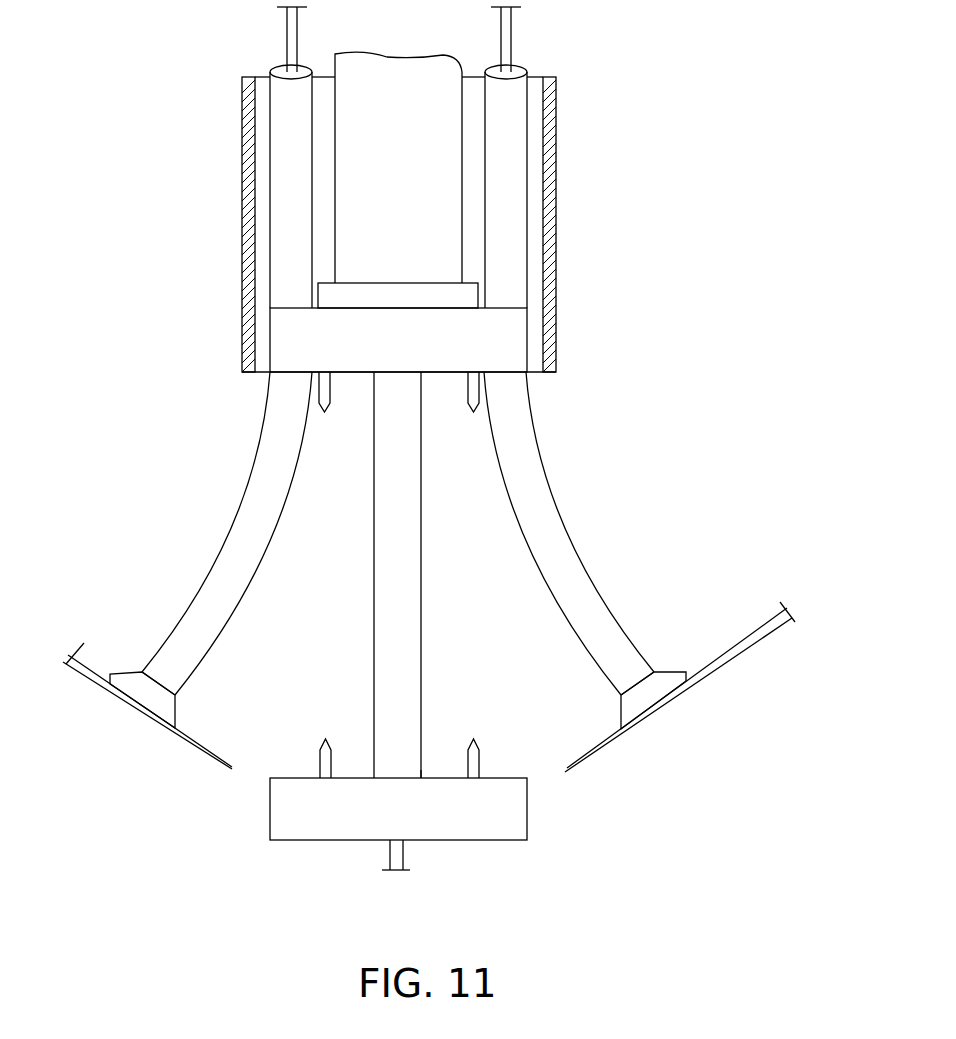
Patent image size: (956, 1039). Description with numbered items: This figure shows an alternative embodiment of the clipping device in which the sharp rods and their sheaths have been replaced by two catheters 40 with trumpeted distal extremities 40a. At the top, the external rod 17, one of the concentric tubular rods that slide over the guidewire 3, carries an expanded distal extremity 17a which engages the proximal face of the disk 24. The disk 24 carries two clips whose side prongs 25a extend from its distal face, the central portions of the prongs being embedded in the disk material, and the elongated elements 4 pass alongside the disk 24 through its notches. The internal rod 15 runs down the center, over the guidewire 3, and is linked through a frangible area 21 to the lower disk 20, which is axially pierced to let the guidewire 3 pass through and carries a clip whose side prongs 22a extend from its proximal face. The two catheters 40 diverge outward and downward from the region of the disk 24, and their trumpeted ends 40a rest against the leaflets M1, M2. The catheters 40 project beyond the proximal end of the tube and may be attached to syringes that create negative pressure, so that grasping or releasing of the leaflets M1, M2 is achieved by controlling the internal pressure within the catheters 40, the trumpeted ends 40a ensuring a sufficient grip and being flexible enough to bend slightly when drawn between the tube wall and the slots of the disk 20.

The elongated element 4 is at (270, 178).
The external rod 17 is at (443, 236).
The expanded distal extremity 17a is at (465, 297).
The disk 24 is at (503, 352).
The side prongs 25a is at (483, 397).
The internal rod 15 is at (403, 682).
The catheter 40 is at (406, 550).
The trumpeted distal extremity 40a is at (662, 670).
The leaflet M1 is at (740, 653).
The leaflet M2 is at (190, 748).
The disk 20 is at (292, 822).
The side prongs 22a is at (333, 758).
The frangible area 21 is at (432, 770).
The guidewire 3 is at (390, 857).